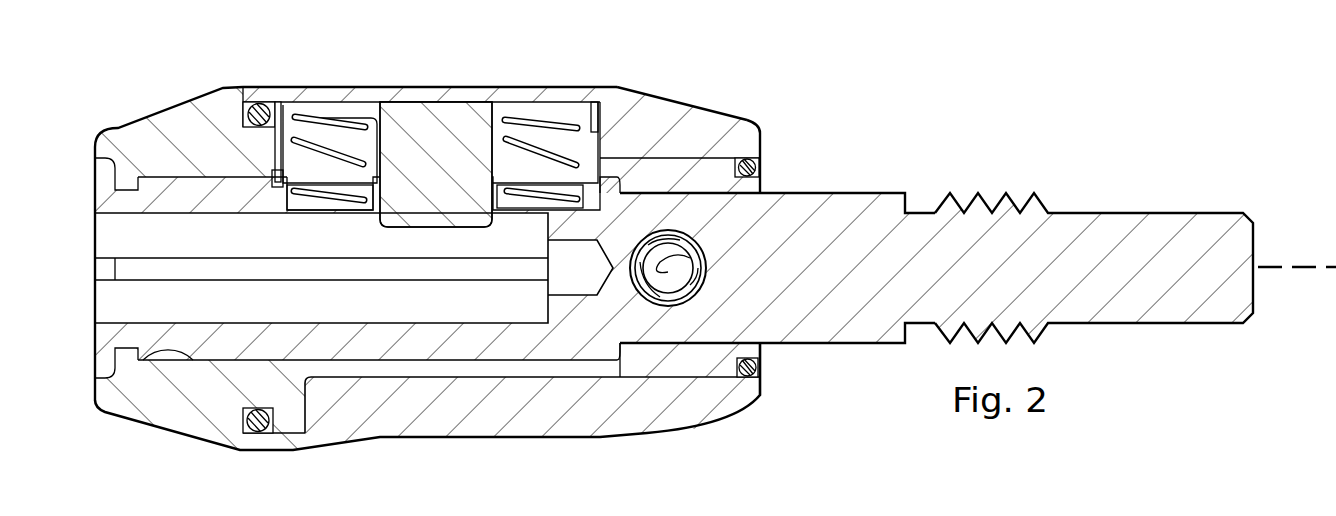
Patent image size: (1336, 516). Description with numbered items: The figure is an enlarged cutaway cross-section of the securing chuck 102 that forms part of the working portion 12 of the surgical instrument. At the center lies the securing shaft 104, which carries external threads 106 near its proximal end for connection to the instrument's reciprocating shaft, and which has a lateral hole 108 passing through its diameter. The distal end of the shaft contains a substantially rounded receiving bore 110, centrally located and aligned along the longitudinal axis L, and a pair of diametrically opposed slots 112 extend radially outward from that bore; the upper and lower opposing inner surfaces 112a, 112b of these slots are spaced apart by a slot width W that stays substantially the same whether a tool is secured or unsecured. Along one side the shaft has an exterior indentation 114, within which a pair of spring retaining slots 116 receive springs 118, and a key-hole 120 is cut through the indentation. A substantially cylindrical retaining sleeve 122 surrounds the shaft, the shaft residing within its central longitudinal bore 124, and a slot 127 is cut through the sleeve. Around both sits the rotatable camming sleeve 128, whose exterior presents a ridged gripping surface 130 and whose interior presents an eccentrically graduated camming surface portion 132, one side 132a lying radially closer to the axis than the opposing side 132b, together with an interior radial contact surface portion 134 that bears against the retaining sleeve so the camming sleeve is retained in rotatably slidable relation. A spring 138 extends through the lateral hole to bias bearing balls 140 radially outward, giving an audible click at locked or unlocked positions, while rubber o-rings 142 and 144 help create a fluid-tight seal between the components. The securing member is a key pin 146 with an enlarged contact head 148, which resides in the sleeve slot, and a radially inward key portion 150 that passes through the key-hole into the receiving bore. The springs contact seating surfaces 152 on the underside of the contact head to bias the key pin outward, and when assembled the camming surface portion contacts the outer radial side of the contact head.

The working portion 12 is at (833, 68).
The securing chuck 102 is at (768, 128).
The securing shaft 104 is at (890, 186).
The external threads 106 is at (1043, 208).
The lateral hole 108 is at (640, 298).
The receiving bore 110 is at (103, 305).
The slots 112 is at (105, 270).
The upper inner surface 112a is at (205, 265).
The lower inner surface 112b is at (250, 275).
The exterior indentation 114 is at (275, 158).
The spring retaining slots 116 is at (282, 193).
The springs 118 is at (350, 110).
The key-hole 120 is at (365, 205).
The retaining sleeve 122 is at (178, 457).
The central longitudinal bore 124 is at (144, 362).
The slot 127 is at (245, 135).
The camming sleeve 128 is at (752, 150).
The gripping surface 130 is at (328, 447).
The interior camming surface portion 132 is at (565, 390).
The side of camming surface portion 132a is at (693, 365).
The opposing side of camming surface portion 132b is at (450, 108).
The interior radial contact surface portion 134 is at (690, 160).
The spring 138 is at (690, 300).
The bearing balls 140 is at (668, 272).
The o-ring 142 is at (760, 168).
The o-ring 144 is at (268, 101).
The key pin 146 is at (492, 91).
The contact head 148 is at (393, 100).
The key portion 150 is at (452, 176).
The seating surfaces 152 is at (310, 101).
The slot width W is at (363, 250).
The longitudinal axis L is at (1292, 265).